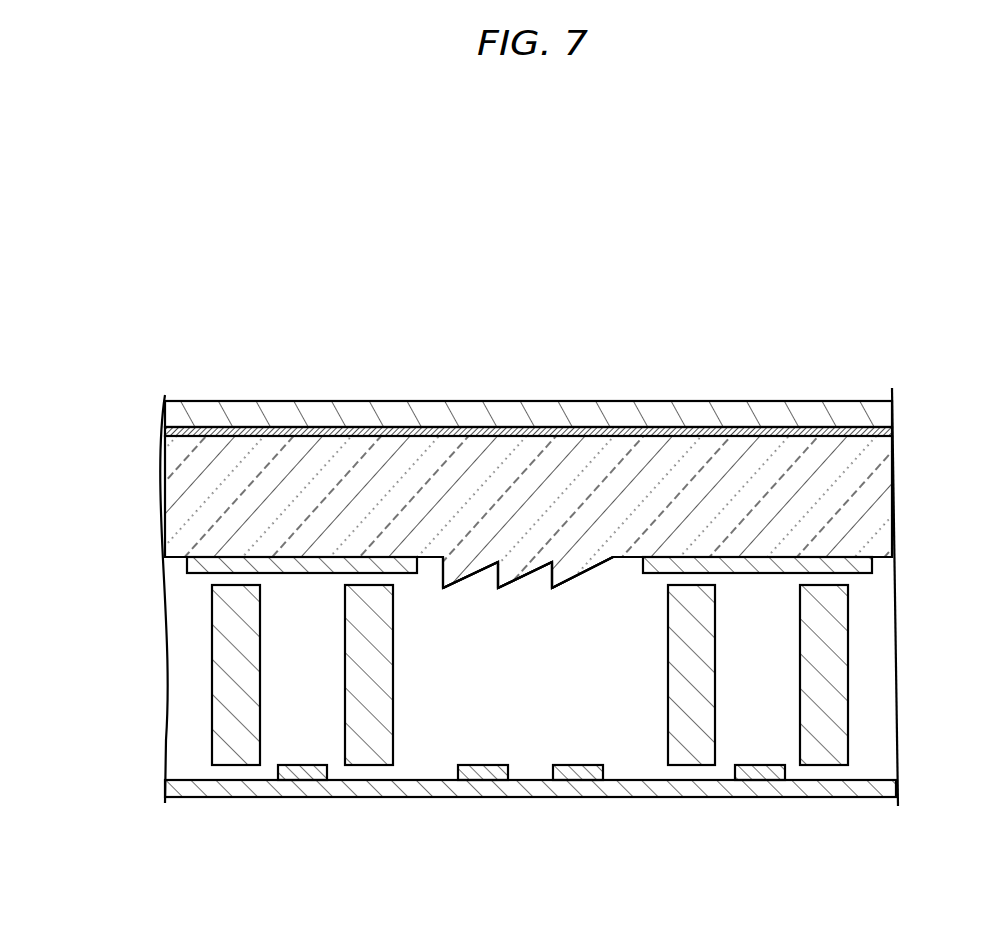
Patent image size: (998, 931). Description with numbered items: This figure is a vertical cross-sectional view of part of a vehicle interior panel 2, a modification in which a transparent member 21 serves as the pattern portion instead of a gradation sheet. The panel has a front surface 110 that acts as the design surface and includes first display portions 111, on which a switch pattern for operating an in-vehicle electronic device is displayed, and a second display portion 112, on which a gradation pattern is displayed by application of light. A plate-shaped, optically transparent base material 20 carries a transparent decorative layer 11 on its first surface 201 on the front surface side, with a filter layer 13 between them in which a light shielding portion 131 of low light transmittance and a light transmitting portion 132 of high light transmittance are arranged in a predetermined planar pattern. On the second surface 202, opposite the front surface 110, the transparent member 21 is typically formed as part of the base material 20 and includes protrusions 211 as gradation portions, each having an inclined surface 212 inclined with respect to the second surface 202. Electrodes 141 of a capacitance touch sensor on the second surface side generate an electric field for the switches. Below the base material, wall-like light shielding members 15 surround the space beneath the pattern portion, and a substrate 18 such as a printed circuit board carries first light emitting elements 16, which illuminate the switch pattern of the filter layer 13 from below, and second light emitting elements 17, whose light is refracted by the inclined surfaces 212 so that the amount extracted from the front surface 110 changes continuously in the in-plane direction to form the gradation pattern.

The vehicle interior panel 2 is at (897, 263).
The decorative layer 11 is at (877, 410).
The front surface 110 is at (195, 400).
The first display portion 111 is at (847, 401).
The second display portion 112 is at (632, 401).
The filter layer 13 is at (455, 297).
The light shielding portion 131 is at (363, 431).
The light transmitting portion 132 is at (411, 432).
The base material 20 is at (880, 495).
The first surface 201 is at (649, 436).
The second surface 202 is at (428, 565).
The transparent member 21 is at (607, 592).
The protrusion 211 is at (522, 574).
The inclined surface 212 is at (574, 578).
The electrode 141 is at (188, 562).
The light shielding member 15 is at (228, 675).
The first light emitting element 16 is at (304, 781).
The second light emitting element 17 is at (485, 781).
The substrate 18 is at (890, 786).